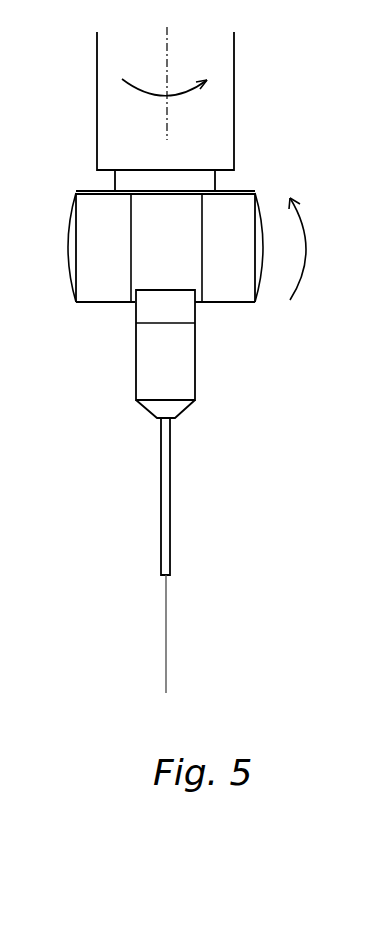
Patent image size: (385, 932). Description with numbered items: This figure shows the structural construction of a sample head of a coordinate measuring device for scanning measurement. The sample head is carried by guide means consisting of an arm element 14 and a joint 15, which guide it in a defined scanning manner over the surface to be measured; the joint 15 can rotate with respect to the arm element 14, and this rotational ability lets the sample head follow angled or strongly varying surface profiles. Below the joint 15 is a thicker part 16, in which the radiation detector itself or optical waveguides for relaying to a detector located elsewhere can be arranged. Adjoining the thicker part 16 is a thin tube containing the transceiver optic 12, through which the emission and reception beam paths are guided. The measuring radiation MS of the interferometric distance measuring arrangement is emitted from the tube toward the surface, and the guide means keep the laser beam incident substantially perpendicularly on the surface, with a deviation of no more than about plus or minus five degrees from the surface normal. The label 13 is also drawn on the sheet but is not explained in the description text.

The arm element 14 is at (213, 49).
The joint 15 is at (230, 280).
The thicker part 16 is at (175, 360).
The transceiver optic 12 is at (168, 492).
The measuring device 13 is at (371, 614).
The measuring radiation MS is at (197, 634).